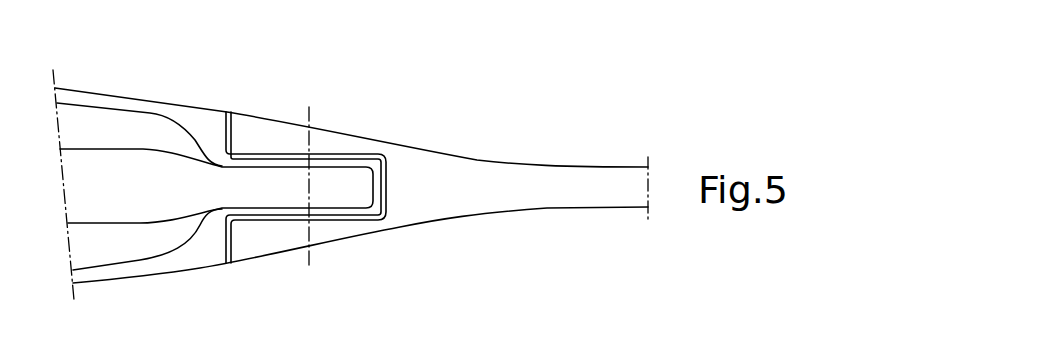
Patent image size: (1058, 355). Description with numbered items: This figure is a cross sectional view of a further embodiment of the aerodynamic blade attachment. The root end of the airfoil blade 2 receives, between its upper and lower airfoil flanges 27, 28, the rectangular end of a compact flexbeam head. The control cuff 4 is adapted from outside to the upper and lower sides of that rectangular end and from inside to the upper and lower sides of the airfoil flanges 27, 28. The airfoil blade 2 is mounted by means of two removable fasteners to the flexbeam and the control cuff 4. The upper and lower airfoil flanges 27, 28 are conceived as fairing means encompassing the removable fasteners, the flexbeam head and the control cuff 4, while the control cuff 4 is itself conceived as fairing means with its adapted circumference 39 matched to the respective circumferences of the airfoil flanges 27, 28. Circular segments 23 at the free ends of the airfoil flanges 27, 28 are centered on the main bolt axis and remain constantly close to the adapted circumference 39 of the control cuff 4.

The airfoil blade 2 is at (546, 184).
The control cuff 4 is at (210, 127).
The upper airfoil flange 27 is at (267, 137).
The adapted circumference 39 is at (224, 243).
The circular segment 23 is at (232, 263).
The lower airfoil flange 28 is at (281, 238).